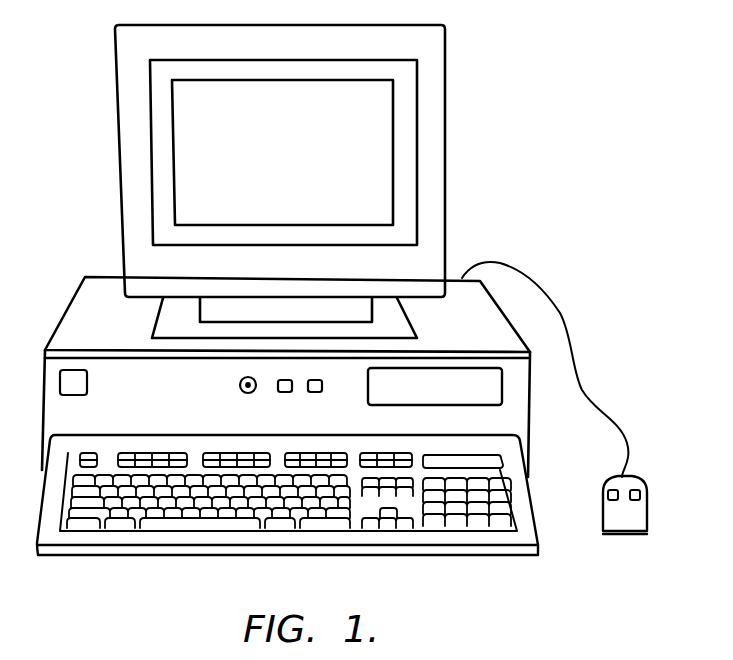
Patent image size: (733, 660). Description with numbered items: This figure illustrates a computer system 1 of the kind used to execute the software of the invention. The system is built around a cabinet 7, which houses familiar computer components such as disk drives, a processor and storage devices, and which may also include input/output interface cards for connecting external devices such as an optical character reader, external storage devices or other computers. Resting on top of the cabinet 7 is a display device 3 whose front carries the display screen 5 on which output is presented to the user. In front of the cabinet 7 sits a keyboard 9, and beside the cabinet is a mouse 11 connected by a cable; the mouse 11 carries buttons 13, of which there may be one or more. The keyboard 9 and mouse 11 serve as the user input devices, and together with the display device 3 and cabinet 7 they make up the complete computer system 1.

The computer system 1 is at (588, 48).
The display device 3 is at (447, 137).
The display screen 5 is at (362, 120).
The cabinet 7 is at (465, 323).
The keyboard 9 is at (312, 542).
The mouse 11 is at (644, 497).
The buttons 13 is at (614, 492).